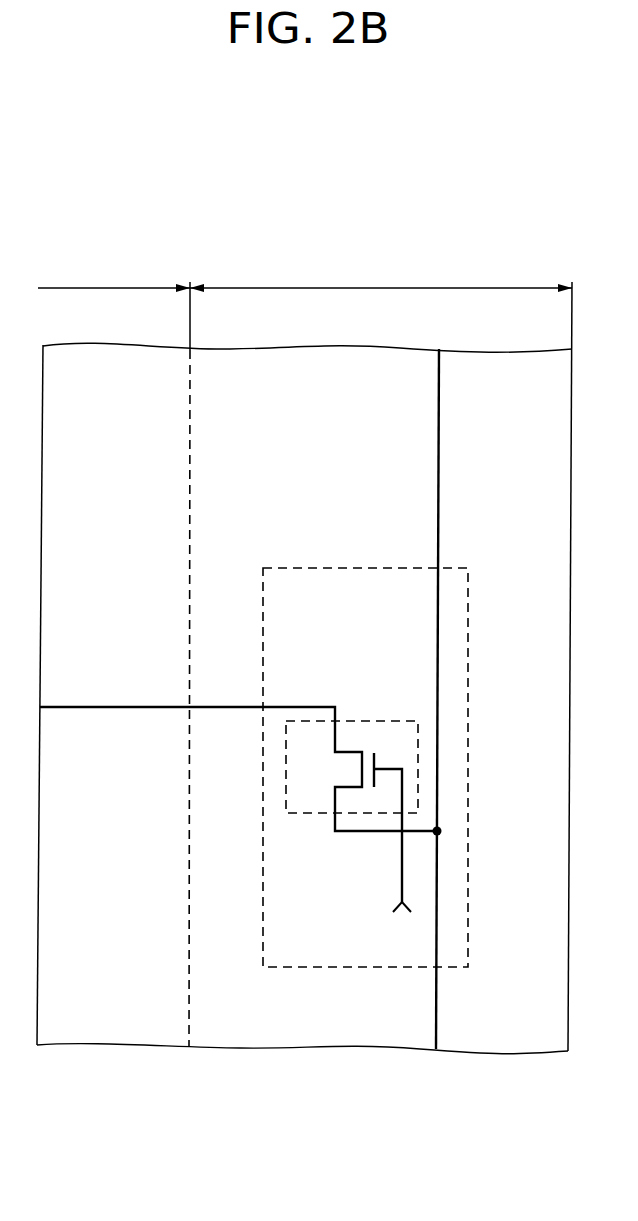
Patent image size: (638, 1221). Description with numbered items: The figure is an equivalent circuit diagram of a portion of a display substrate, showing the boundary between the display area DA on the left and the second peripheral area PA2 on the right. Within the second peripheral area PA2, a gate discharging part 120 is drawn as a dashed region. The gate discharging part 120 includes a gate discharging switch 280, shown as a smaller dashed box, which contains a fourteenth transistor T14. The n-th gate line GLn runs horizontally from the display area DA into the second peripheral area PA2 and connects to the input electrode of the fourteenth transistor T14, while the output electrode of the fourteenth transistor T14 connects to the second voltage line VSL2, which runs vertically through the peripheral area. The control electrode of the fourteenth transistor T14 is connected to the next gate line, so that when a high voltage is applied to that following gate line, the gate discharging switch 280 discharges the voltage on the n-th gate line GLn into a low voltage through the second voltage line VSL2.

The gate discharging part 120 is at (348, 567).
The gate discharging switch 280 is at (374, 720).
The fourteenth transistor T14 is at (374, 827).
The n-th gate line GLn is at (117, 705).
The second voltage line VSL2 is at (440, 462).
The display area DA is at (114, 274).
The second peripheral area PA2 is at (381, 274).